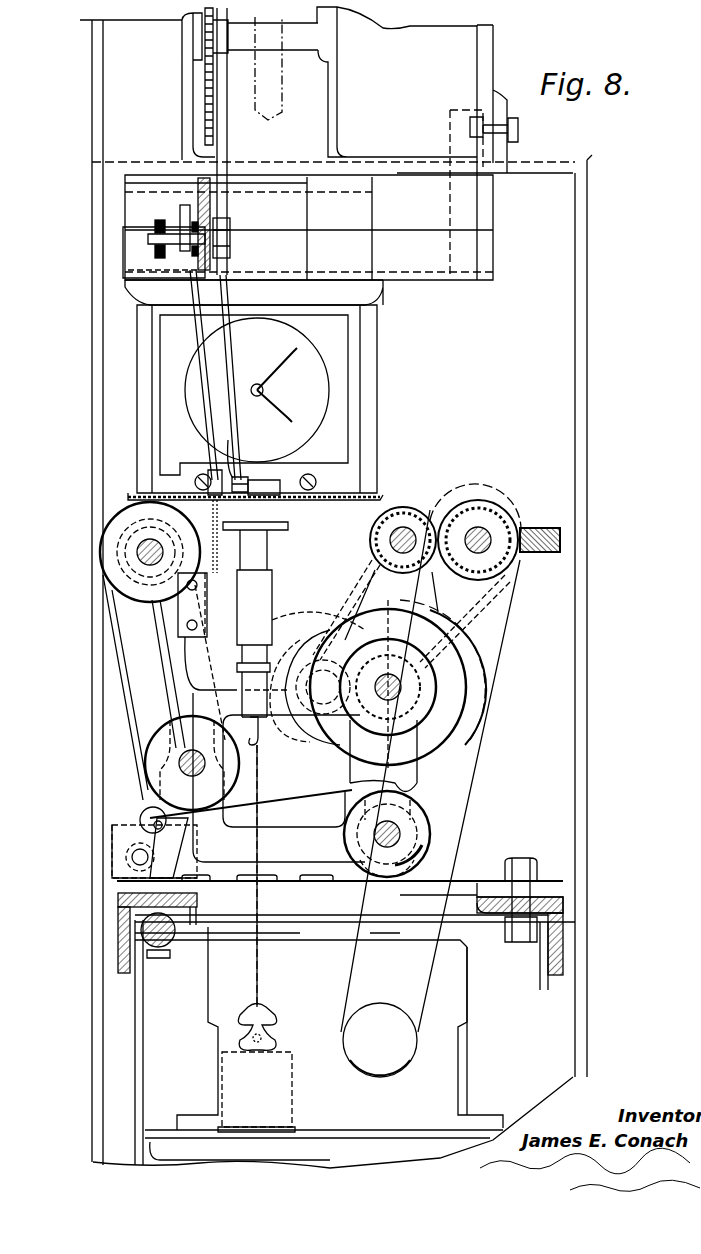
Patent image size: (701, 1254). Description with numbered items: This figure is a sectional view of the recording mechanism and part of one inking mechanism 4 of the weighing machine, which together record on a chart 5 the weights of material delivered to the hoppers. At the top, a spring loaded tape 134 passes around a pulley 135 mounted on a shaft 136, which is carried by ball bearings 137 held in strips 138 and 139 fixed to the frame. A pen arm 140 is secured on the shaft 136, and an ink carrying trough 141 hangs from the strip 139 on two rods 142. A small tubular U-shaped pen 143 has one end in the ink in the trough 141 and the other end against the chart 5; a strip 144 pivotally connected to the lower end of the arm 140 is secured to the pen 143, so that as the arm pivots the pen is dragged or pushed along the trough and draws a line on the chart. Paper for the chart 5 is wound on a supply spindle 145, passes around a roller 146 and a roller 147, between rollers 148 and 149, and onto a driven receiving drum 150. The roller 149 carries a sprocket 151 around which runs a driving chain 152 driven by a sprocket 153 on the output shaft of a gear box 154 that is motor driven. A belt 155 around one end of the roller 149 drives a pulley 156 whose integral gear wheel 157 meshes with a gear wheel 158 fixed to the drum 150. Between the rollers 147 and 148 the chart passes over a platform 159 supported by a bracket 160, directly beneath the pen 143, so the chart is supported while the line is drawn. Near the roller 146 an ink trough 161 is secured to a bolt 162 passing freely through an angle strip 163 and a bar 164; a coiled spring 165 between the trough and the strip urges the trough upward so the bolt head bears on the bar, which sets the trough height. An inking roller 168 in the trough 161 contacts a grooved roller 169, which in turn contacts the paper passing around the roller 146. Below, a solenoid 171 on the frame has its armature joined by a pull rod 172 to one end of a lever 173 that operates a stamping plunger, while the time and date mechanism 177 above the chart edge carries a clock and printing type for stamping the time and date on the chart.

The inking mechanism 4 is at (180, 281).
The chart 5 is at (120, 658).
The spring loaded tape 134 is at (229, 137).
The pulley 135 is at (222, 225).
The shaft 136 is at (180, 222).
The ball bearings 137 is at (160, 245).
The strip 138 is at (165, 235).
The strip 139 is at (195, 183).
The pen arm 140 is at (212, 320).
The ink carrying trough 141 is at (252, 490).
The rods 142 is at (232, 360).
The pen 143 is at (232, 448).
The strip 144 is at (213, 468).
The supply spindle 145 is at (395, 835).
The roller 146 is at (150, 752).
The roller 147 is at (105, 552).
The roller 148 is at (403, 505).
The roller 149 is at (480, 505).
The driven receiving drum 150 is at (400, 690).
The sprocket 151 is at (515, 567).
The driving chain 152 is at (355, 968).
The sprocket 153 is at (386, 1005).
The gear box 154 is at (455, 1045).
The belt 155 is at (322, 625).
The pulley 156 is at (315, 730).
The gear wheel 157 is at (295, 645).
The gear wheel 158 is at (445, 700).
The platform 159 is at (265, 500).
The bracket 160 is at (185, 640).
The ink trough 161 is at (120, 866).
The bolt 162 is at (147, 935).
The angle strip 163 is at (190, 925).
The bar 164 is at (148, 945).
The coiled spring 165 is at (117, 890).
The inking roller 168 is at (125, 848).
The grooved roller 169 is at (148, 812).
The solenoid 171 is at (222, 1075).
The pull rod 172 is at (258, 972).
The lever 173 is at (258, 728).
The time and date mechanism 177 is at (348, 392).